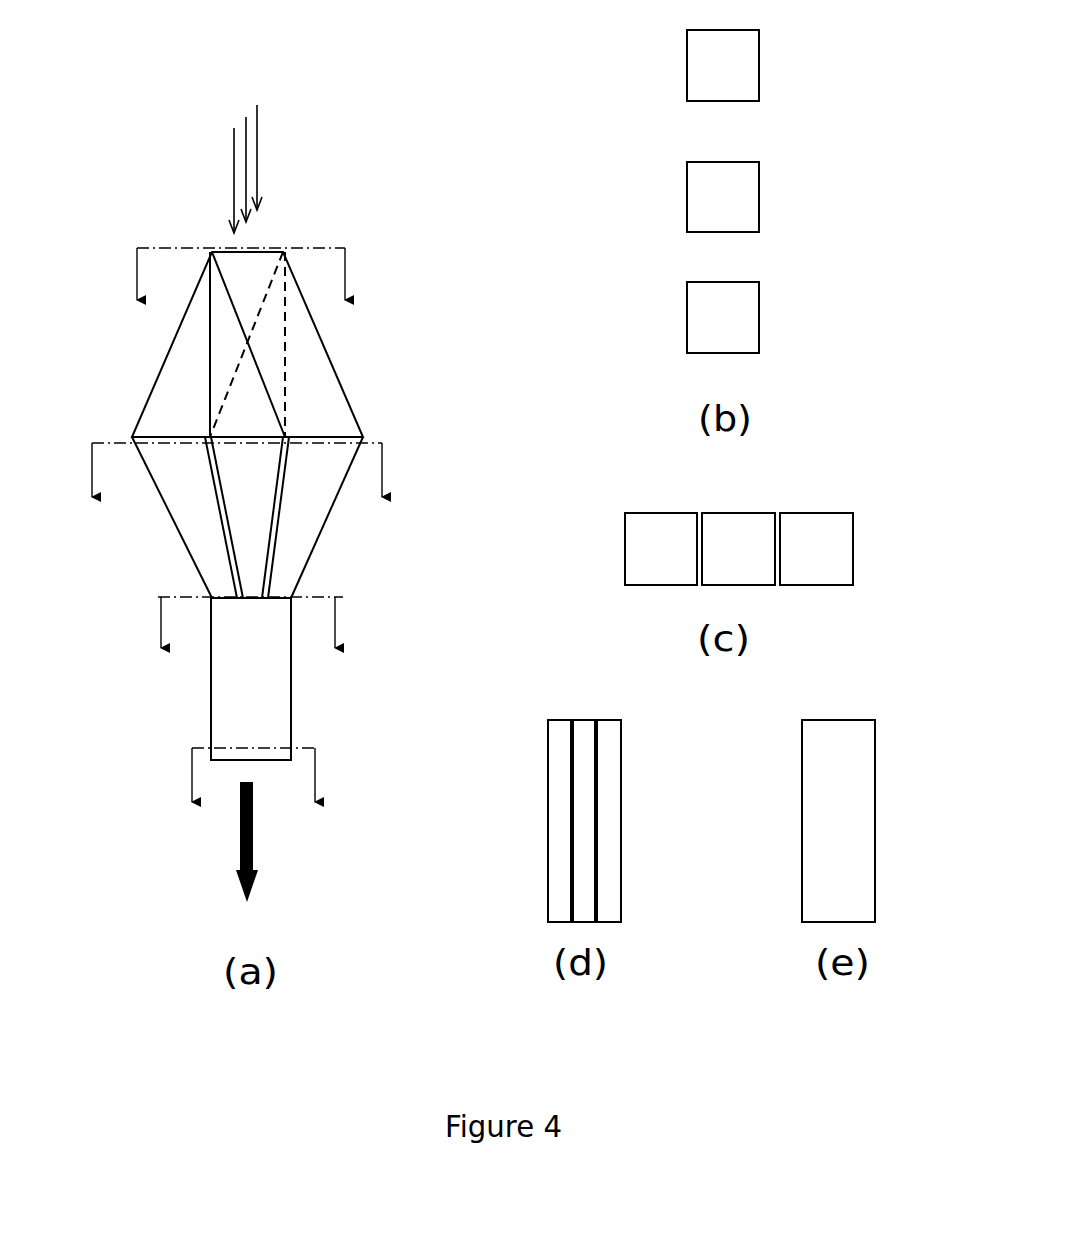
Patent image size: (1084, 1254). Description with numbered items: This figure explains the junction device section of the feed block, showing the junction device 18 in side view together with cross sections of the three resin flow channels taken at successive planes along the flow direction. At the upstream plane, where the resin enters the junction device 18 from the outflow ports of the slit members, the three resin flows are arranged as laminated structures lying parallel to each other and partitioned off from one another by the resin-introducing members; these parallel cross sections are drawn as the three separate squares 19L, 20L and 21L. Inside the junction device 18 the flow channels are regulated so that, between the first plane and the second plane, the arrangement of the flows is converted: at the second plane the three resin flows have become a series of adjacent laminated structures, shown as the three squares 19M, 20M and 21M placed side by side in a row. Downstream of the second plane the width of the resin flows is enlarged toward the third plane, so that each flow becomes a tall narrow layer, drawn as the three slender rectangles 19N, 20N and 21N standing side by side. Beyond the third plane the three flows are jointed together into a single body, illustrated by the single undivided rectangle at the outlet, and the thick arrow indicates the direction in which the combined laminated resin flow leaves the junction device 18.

The junction device 18 is at (141, 208).
The resin flow channel at line L-L' 19L is at (740, 83).
The resin flow channel at line L-L' 20L is at (740, 202).
The resin flow channel at line L-L' 21L is at (740, 323).
The resin flow channel at line M-M' 19M is at (632, 529).
The resin flow channel at line M-M' 20M is at (720, 520).
The resin flow channel at line M-M' 21M is at (842, 563).
The resin flow channel at line N-N' 19N is at (554, 772).
The resin flow channel at line N-N' 20N is at (575, 727).
The resin flow channel at line N-N' 21N is at (605, 782).